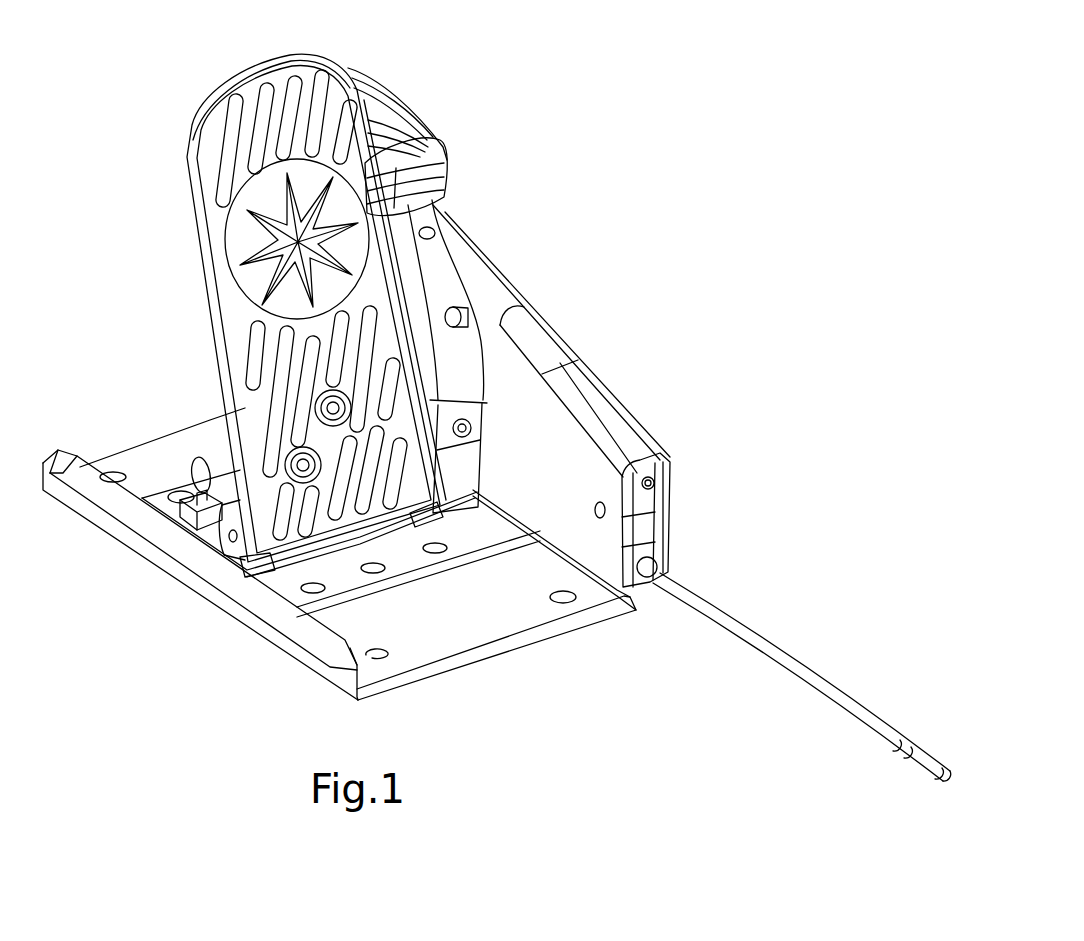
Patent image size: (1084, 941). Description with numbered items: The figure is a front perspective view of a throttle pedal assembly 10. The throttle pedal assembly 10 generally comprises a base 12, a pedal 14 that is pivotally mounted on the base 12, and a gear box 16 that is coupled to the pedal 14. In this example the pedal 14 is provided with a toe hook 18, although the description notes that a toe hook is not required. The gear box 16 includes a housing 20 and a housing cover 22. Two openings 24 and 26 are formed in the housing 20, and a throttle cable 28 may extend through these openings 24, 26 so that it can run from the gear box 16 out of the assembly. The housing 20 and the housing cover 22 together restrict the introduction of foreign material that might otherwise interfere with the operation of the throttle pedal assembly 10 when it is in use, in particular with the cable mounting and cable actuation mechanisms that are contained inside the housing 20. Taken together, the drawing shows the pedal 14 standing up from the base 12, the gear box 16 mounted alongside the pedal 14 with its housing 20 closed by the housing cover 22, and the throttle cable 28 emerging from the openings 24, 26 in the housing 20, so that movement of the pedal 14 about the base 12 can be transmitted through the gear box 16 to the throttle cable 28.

The throttle pedal assembly 10 is at (102, 302).
The base 12 is at (450, 663).
The pedal 14 is at (333, 63).
The gear box 16 is at (547, 325).
The toe hook 18 is at (443, 165).
The housing 20 is at (517, 377).
The housing cover 22 is at (608, 398).
The opening 24 is at (662, 470).
The opening 26 is at (660, 558).
The throttle cable 28 is at (832, 693).